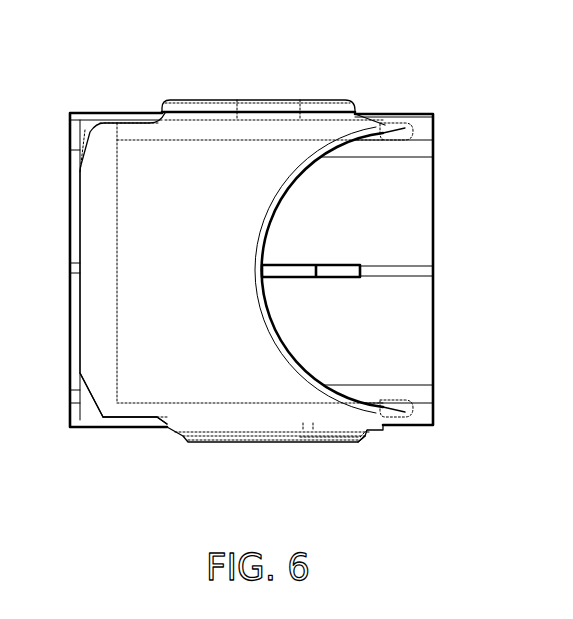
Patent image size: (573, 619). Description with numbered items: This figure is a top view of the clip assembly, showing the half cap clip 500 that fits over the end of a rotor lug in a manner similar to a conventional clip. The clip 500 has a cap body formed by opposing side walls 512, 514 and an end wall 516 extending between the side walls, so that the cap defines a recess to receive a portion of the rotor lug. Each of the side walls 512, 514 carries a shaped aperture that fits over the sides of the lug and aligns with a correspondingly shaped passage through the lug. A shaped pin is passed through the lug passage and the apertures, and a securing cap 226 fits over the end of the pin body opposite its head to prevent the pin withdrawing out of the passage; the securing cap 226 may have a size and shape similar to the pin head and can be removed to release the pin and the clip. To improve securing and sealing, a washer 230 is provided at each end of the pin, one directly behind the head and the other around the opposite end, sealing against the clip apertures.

The half cap clip 500 is at (148, 158).
The washer 230 is at (283, 117).
The side wall 512 is at (395, 125).
The side wall 514 is at (155, 418).
The end wall 516 is at (105, 362).
The securing cap 226 is at (360, 442).